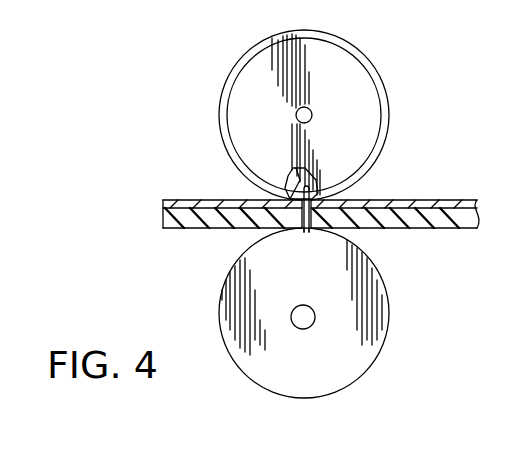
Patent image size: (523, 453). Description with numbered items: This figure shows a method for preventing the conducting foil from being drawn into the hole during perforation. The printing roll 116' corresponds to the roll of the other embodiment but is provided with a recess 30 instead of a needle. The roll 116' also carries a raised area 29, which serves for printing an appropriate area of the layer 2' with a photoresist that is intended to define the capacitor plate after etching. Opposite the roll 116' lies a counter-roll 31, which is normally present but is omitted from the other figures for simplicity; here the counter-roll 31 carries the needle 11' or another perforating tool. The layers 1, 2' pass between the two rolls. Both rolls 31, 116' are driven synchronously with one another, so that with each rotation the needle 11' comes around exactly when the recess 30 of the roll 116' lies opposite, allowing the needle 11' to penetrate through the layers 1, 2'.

The roll 116' is at (326, 115).
The recess 30 is at (292, 182).
The raised area 29 is at (322, 190).
The layer 1 is at (477, 228).
The layer 2' is at (328, 190).
The needle 11' is at (350, 242).
The counter-roll 31 is at (387, 312).